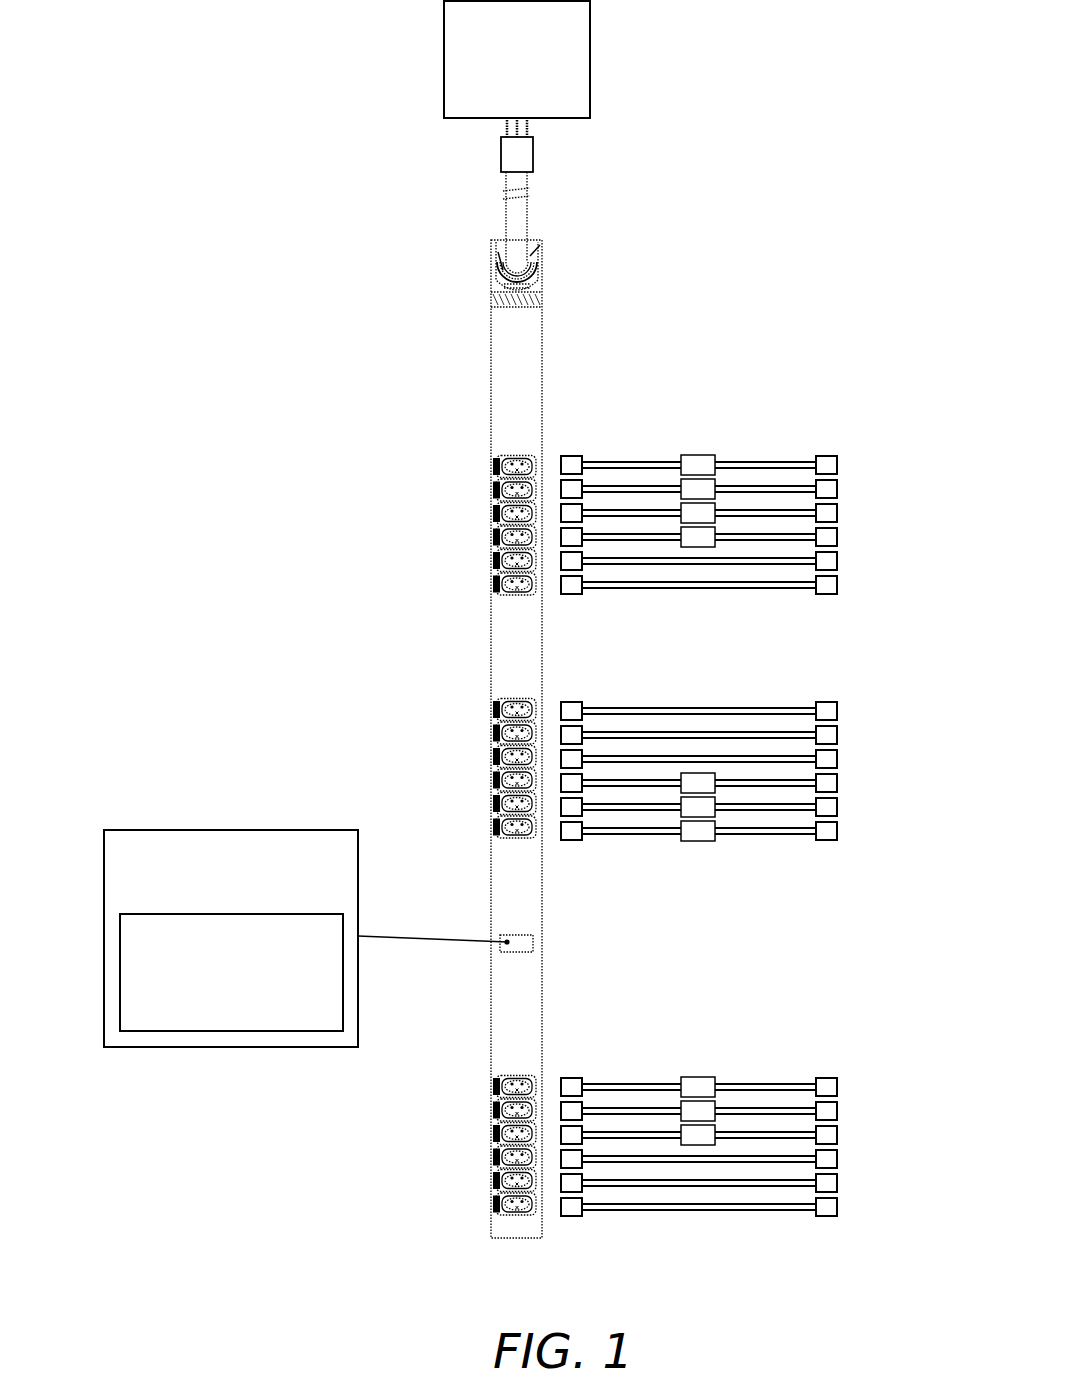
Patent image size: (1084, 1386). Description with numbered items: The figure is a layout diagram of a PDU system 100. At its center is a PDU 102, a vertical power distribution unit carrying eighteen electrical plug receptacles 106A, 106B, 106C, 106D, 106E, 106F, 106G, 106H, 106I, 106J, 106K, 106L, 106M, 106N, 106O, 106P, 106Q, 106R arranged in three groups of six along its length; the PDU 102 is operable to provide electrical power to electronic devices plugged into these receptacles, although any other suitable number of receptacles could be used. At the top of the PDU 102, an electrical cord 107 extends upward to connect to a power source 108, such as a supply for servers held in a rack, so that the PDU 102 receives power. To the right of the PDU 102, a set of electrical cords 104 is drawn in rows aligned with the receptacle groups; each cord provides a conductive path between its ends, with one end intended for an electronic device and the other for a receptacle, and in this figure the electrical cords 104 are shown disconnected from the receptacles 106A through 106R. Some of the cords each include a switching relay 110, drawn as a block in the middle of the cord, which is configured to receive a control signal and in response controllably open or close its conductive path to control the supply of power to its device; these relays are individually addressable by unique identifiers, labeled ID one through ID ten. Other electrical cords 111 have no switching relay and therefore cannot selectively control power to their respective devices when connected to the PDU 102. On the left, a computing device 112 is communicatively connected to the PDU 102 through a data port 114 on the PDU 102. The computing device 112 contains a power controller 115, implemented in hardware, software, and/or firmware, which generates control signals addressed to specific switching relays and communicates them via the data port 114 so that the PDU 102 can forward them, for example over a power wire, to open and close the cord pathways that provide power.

The PDU system 100 is at (218, 278).
The PDU 102 is at (490, 362).
The electrical cords 104 is at (699, 377).
The electrical plug receptacle 106A is at (495, 459).
The electrical plug receptacle 106B is at (495, 482).
The electrical plug receptacle 106C is at (495, 506).
The electrical plug receptacle 106D is at (495, 530).
The electrical plug receptacle 106E is at (495, 553).
The electrical plug receptacle 106F is at (495, 576).
The electrical plug receptacle 106G is at (495, 702).
The electrical plug receptacle 106H is at (495, 726).
The electrical plug receptacle 106I is at (495, 749).
The electrical plug receptacle 106J is at (495, 772).
The electrical plug receptacle 106K is at (495, 796).
The electrical plug receptacle 106L is at (495, 820).
The electrical plug receptacle 106M is at (495, 1079).
The electrical plug receptacle 106N is at (495, 1102).
The electrical plug receptacle 106O is at (495, 1126).
The electrical plug receptacle 106P is at (495, 1150).
The electrical plug receptacle 106Q is at (495, 1173).
The electrical plug receptacle 106R is at (495, 1196).
The electrical cord 107 is at (505, 217).
The power source 108 is at (517, 59).
The switching relay 110 is at (703, 457).
The electrical cords without switching relay 111 is at (753, 710).
The computing device 112 is at (231, 938).
The data port 114 is at (533, 940).
The power controller 115 is at (231, 972).